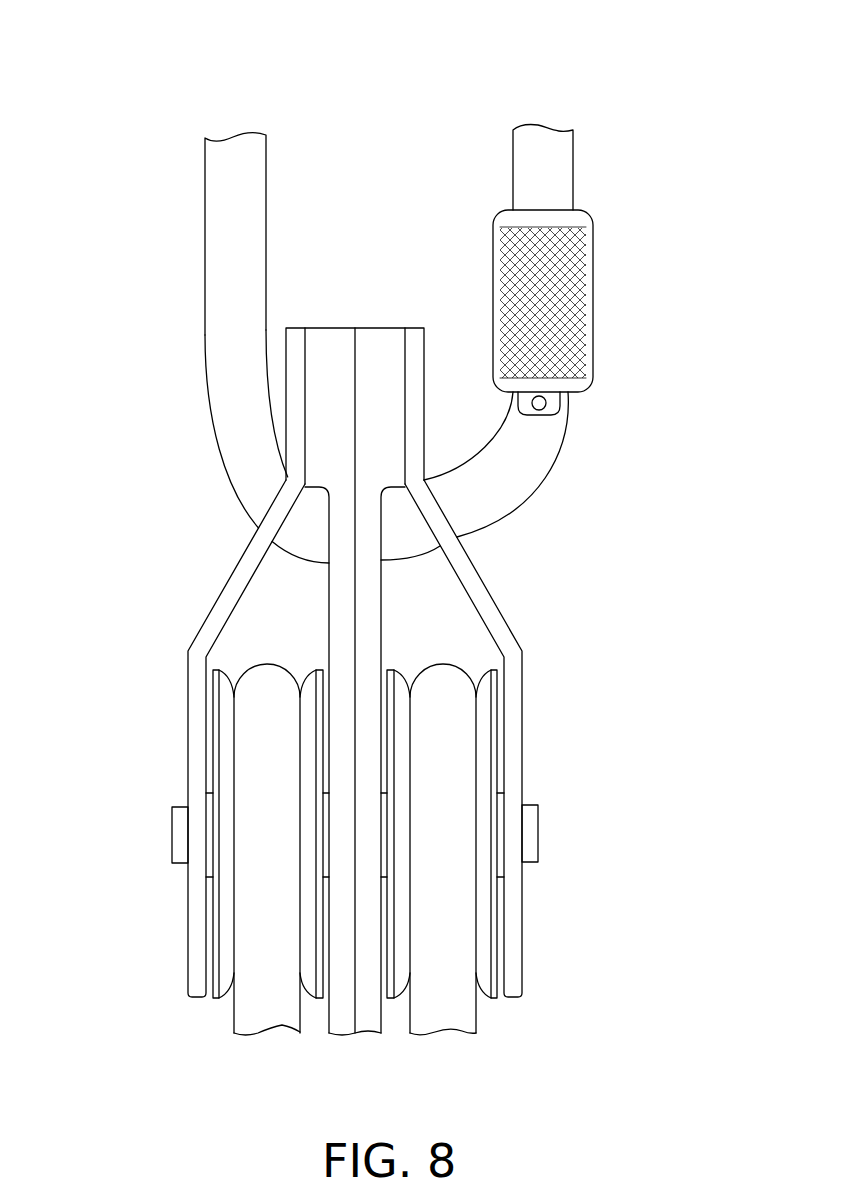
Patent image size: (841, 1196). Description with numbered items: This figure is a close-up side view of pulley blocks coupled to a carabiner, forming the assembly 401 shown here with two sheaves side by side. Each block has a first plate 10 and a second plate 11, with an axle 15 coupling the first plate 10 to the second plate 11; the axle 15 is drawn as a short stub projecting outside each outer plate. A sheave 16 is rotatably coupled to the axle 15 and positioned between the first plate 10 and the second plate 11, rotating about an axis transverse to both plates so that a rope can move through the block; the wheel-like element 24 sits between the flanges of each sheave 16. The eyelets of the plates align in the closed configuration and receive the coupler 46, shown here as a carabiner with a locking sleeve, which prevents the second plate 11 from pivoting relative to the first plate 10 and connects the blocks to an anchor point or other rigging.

The pulley assembly 401 is at (374, 270).
The first plate 10 is at (342, 600).
The second plate 11 is at (187, 675).
The axle 15 is at (172, 832).
The sheave 16 is at (212, 762).
The sheave 24 is at (272, 914).
The coupler 46 is at (487, 483).